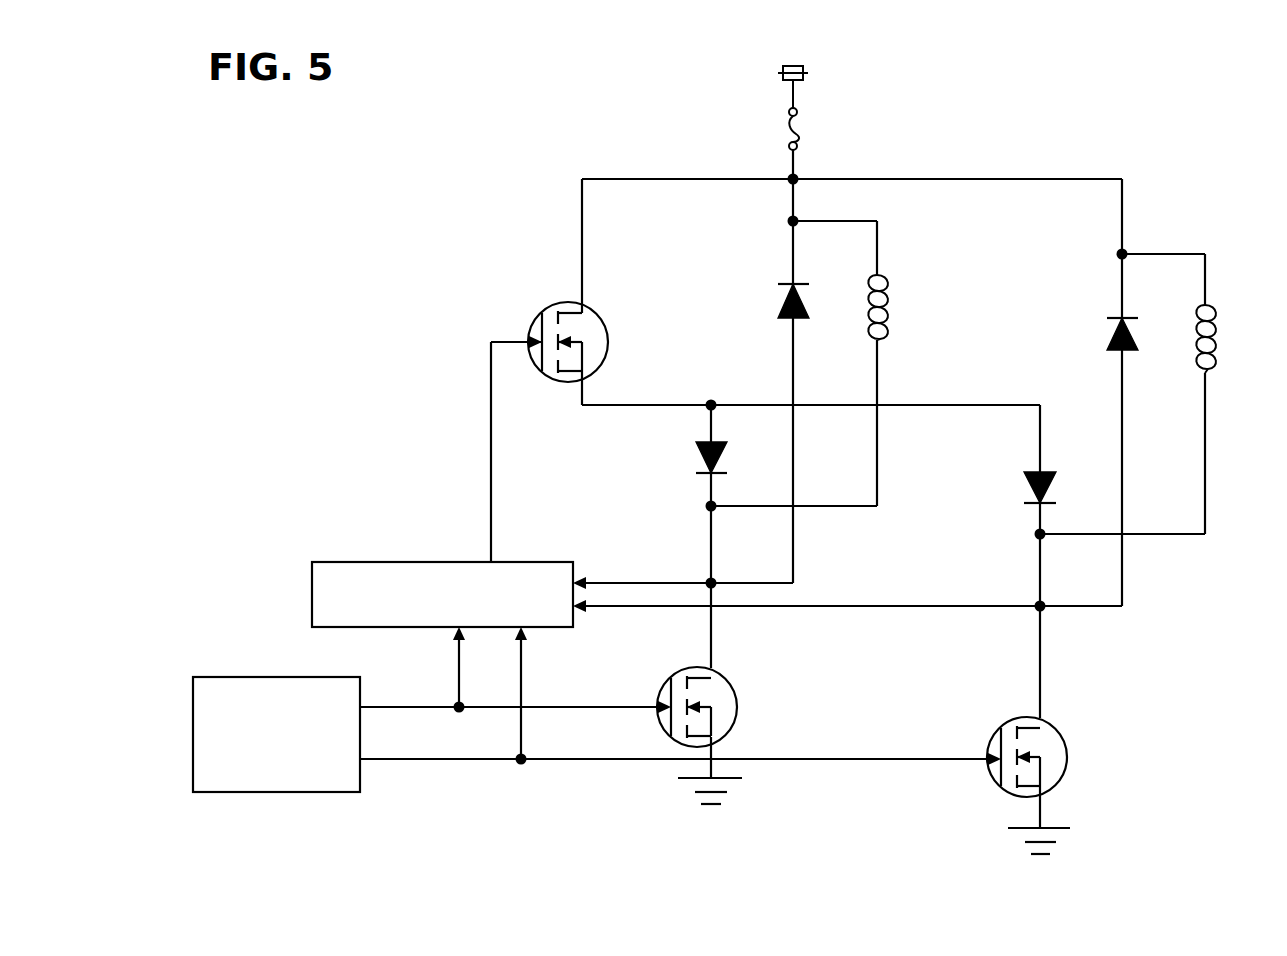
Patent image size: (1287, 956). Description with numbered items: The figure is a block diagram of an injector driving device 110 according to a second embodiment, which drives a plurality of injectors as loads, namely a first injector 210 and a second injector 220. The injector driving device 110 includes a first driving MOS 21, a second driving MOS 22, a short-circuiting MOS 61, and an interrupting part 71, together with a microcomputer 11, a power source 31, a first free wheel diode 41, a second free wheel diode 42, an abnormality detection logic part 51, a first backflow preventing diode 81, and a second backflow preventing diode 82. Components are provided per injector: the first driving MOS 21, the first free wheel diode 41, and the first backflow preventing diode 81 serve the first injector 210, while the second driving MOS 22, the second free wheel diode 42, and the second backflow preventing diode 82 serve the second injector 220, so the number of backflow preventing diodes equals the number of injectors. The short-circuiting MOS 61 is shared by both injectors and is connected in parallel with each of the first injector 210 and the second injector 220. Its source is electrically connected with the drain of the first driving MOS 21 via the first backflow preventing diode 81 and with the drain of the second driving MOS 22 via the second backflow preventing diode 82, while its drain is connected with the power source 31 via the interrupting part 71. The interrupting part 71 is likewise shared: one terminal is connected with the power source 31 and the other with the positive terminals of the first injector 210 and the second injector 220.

The injector driving device 110 is at (342, 226).
The power source 31 is at (778, 78).
The interrupting part 71 is at (800, 130).
The short-circuiting MOS 61 is at (556, 302).
The first free wheel diode 41 is at (778, 304).
The first injector 210 is at (889, 292).
The second free wheel diode 42 is at (1106, 336).
The second injector 220 is at (1218, 322).
The first backflow preventing diode 81 is at (697, 460).
The second backflow preventing diode 82 is at (1024, 490).
The abnormality detection logic part 51 is at (312, 578).
The microcomputer 11 is at (274, 676).
The first driving MOS 21 is at (682, 670).
The second driving MOS 22 is at (1010, 718).